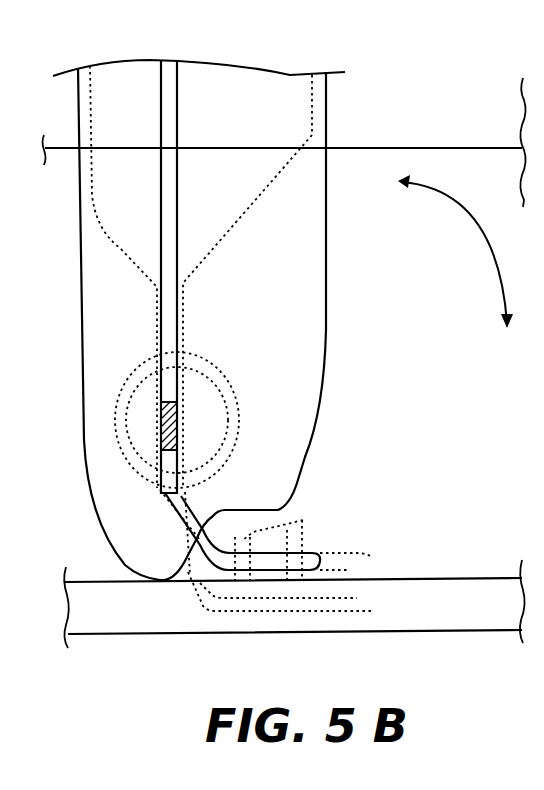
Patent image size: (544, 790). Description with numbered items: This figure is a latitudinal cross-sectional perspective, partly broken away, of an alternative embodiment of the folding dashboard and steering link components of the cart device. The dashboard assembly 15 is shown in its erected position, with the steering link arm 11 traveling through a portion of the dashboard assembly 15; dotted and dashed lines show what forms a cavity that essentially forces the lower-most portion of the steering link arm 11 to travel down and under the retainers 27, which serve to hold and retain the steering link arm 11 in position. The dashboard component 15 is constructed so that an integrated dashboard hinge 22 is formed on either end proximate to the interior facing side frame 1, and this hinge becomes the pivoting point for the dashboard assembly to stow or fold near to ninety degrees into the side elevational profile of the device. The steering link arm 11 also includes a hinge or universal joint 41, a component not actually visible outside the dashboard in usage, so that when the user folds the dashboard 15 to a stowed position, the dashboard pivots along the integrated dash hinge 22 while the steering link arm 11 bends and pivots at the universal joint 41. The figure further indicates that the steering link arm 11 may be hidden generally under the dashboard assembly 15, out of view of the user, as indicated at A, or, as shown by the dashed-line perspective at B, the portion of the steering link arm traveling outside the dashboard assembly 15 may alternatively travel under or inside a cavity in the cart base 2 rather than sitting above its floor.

The side frame 1 is at (480, 153).
The base member 2 is at (103, 620).
The steering link arm 11 is at (170, 203).
The dashboard assembly 15 is at (318, 263).
The integrated dashboard hinge 22 is at (243, 422).
The retainers 27 is at (303, 520).
The universal joint 41 is at (185, 413).
The hidden steering link arm position A is at (373, 557).
The alternative steering link arm position B is at (373, 611).